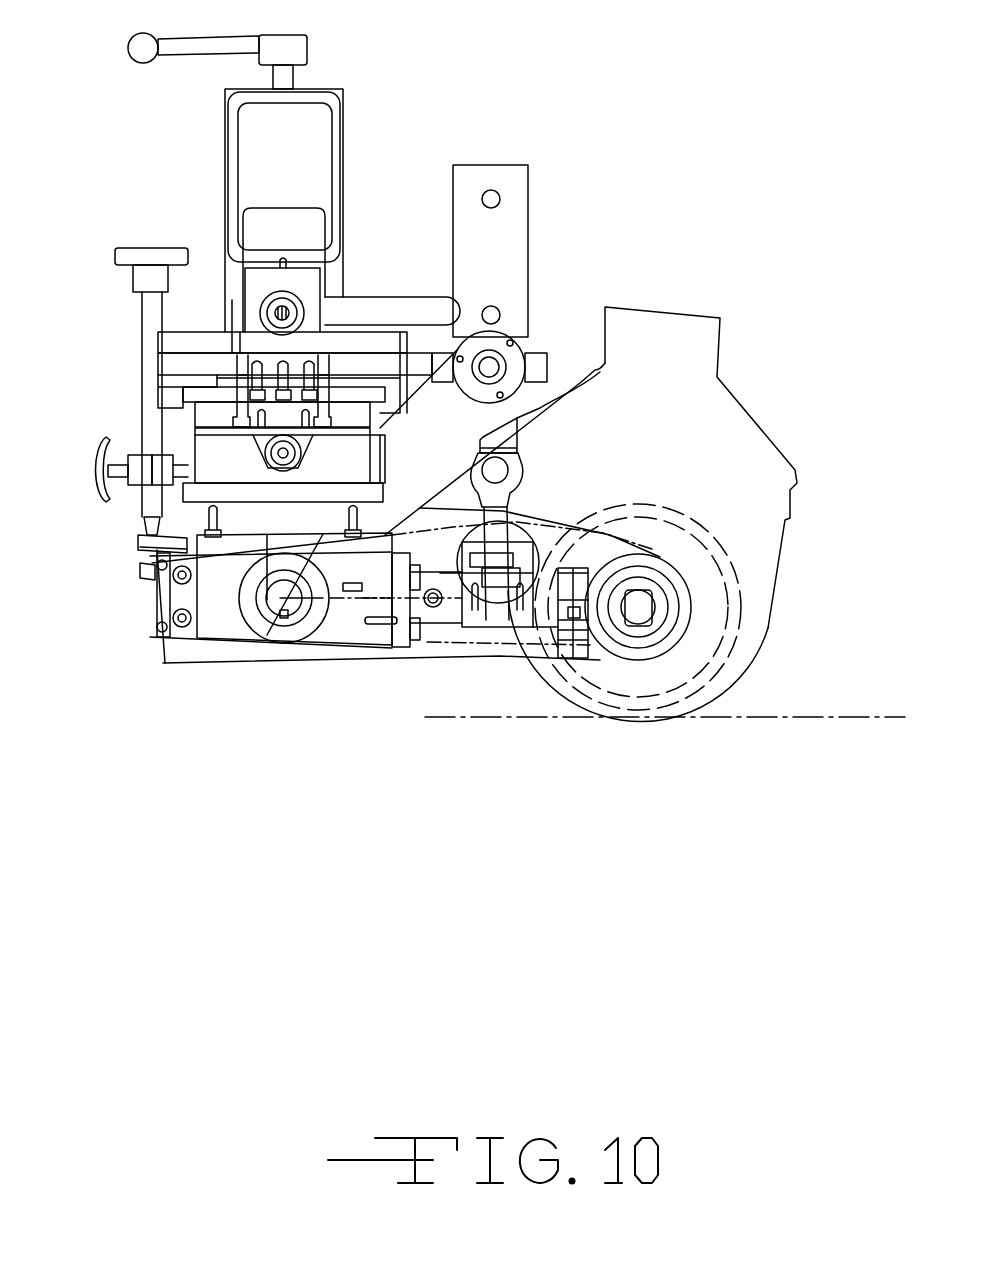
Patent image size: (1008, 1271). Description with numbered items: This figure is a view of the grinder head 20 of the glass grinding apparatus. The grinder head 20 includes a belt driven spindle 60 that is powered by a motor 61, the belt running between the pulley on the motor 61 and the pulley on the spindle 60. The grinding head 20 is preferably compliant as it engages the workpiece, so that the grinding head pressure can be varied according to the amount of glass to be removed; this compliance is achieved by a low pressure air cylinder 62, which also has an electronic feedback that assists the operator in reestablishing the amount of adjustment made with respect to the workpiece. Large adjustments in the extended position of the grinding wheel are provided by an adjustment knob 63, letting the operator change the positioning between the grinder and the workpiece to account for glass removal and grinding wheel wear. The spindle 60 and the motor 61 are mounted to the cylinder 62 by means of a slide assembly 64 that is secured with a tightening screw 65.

The grinder head 20 is at (738, 330).
The belt driven spindle 60 is at (670, 598).
The motor 61 is at (270, 645).
The low pressure air cylinder 62 is at (523, 405).
The adjustment knob 63 is at (148, 334).
The slide assembly 64 is at (220, 475).
The tightening screw 65 is at (95, 470).